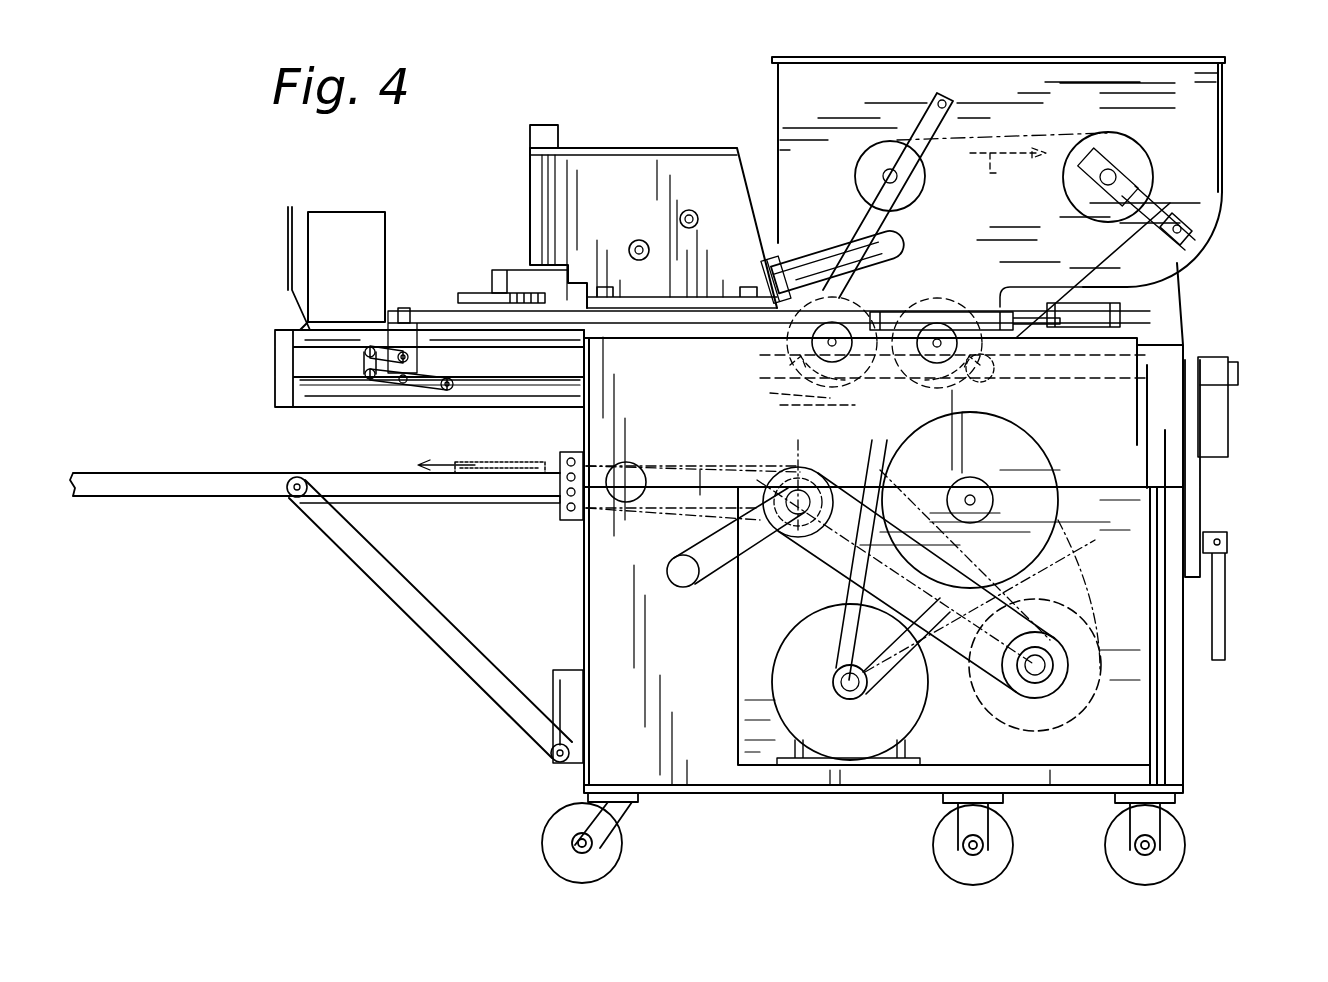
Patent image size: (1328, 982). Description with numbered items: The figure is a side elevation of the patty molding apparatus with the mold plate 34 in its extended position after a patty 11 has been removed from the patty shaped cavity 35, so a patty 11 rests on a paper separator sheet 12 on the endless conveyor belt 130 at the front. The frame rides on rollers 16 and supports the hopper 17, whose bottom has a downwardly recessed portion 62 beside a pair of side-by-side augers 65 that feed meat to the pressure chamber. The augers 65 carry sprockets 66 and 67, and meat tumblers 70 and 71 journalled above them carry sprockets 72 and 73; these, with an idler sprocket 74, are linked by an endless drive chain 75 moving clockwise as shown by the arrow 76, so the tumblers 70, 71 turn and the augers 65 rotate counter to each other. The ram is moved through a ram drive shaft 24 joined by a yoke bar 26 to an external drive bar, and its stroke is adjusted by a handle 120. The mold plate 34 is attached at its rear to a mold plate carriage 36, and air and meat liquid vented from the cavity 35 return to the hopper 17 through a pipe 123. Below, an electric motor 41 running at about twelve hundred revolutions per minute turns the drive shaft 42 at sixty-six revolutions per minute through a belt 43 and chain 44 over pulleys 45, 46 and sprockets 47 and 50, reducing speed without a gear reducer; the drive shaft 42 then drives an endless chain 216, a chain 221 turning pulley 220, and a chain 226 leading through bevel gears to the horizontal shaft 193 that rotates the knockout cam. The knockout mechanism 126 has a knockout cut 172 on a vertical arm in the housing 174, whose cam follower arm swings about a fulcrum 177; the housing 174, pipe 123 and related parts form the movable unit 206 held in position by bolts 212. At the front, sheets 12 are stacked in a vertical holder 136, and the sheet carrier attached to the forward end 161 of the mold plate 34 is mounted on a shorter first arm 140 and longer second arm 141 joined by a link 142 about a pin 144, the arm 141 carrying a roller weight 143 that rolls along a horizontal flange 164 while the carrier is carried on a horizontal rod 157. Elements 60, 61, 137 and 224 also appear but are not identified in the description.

The flat patty 11 is at (497, 460).
The paper separator sheet 12 is at (548, 462).
The rollers 16 is at (626, 850).
The hopper 17 is at (900, 80).
The ram drive shaft 24 is at (1190, 360).
The yoke bar 26 is at (1215, 405).
The mold plate 34 is at (650, 328).
The patty shaped cavity 35 is at (545, 330).
The mold plate carriage 36 is at (858, 320).
The electric motor 41 is at (920, 718).
The drive shaft 42 is at (1037, 685).
The belt 43 is at (840, 605).
The chain 44 is at (1050, 565).
The pulley 45 is at (860, 669).
The pulley 46 is at (1050, 450).
The sprocket 47 is at (980, 480).
The sprocket 50 is at (1088, 635).
The bracket 60 is at (1083, 305).
The actuator cylinder 61 is at (972, 315).
The downwardly recessed portion 62 is at (1030, 356).
The augers 65 is at (790, 390).
The sprocket 66 is at (812, 416).
The sprocket 67 is at (930, 398).
The meat tumbler 70 is at (950, 97).
The meat tumbler 71 is at (1178, 207).
The sprocket 72 is at (925, 195).
The sprocket 73 is at (1118, 152).
The idler sprocket 74 is at (1025, 380).
The endless drive chain 75 is at (1025, 145).
The arrow 76 is at (1008, 173).
The external handle 120 is at (1225, 605).
The pipe 123 is at (905, 242).
The knockout mechanism 126 is at (509, 258).
The endless conveyor belt 130 is at (450, 496).
The vertical holder 136 is at (350, 257).
The bracket 137 is at (288, 245).
The first hinged arm 140 is at (380, 352).
The second hinged arm 141 is at (405, 395).
The link 142 is at (360, 367).
The roller weight 143 is at (447, 392).
The pin 144 is at (360, 385).
The horizontal rod 157 is at (410, 360).
The forward end 161 is at (423, 310).
The horizontal flange 164 is at (490, 378).
The knockout cut 172 is at (462, 292).
The housing 174 is at (636, 168).
The fulcrum 177 is at (638, 240).
The horizontal shaft 193 is at (689, 208).
The movable unit 206 is at (722, 140).
The bolts 212 is at (618, 300).
The endless chain 216 is at (862, 492).
The pulley 220 is at (628, 505).
The endless chain 221 is at (695, 468).
The bracket 224 is at (565, 522).
The endless chain 226 is at (705, 580).